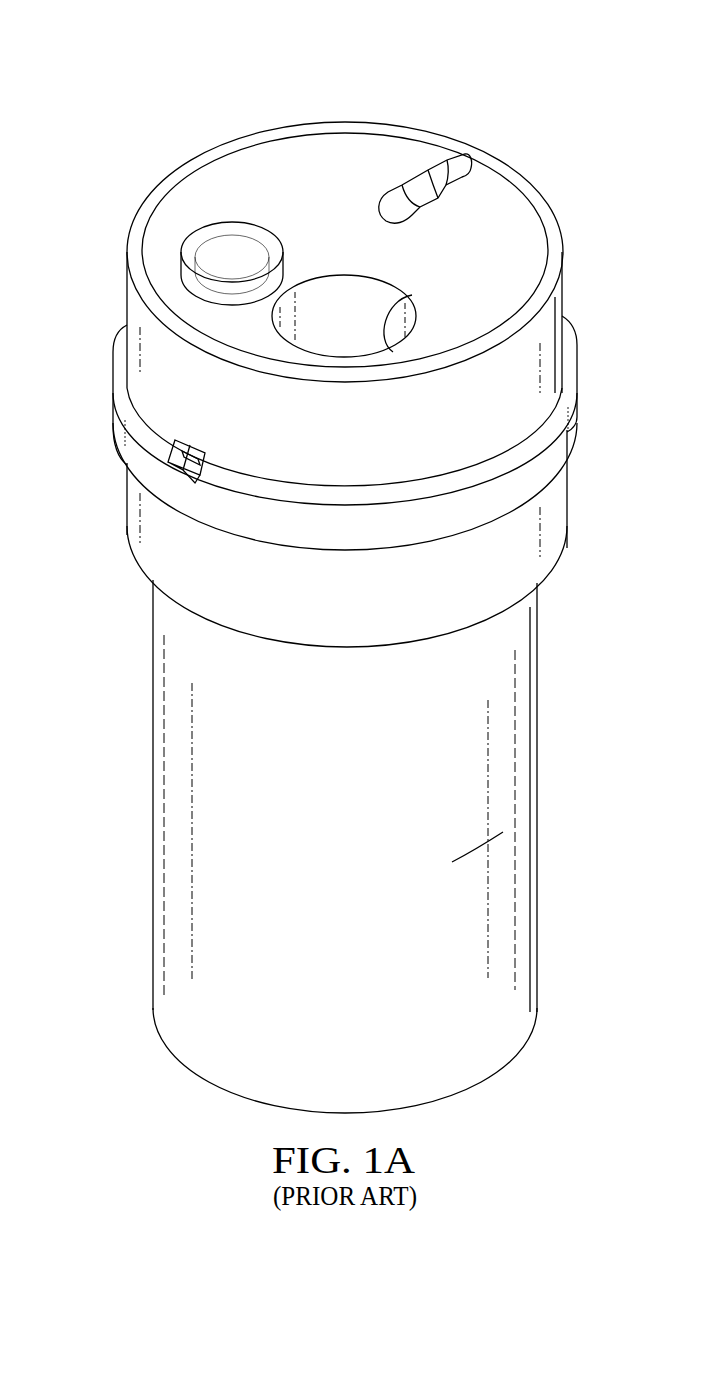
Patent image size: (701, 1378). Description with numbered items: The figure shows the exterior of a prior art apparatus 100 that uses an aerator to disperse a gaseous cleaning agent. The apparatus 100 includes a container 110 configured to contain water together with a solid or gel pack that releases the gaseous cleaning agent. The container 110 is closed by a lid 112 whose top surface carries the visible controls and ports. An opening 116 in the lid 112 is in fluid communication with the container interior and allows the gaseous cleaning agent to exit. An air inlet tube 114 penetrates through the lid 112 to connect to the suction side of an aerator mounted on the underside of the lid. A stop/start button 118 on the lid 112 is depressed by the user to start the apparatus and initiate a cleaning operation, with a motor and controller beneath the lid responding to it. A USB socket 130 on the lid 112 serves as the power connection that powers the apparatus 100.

The prior art apparatus 100 is at (118, 70).
The container 110 is at (148, 797).
The lid 112 is at (161, 178).
The air inlet tube 114 is at (449, 160).
The opening 116 is at (398, 302).
The stop/start button 118 is at (246, 248).
The USB socket 130 is at (197, 448).